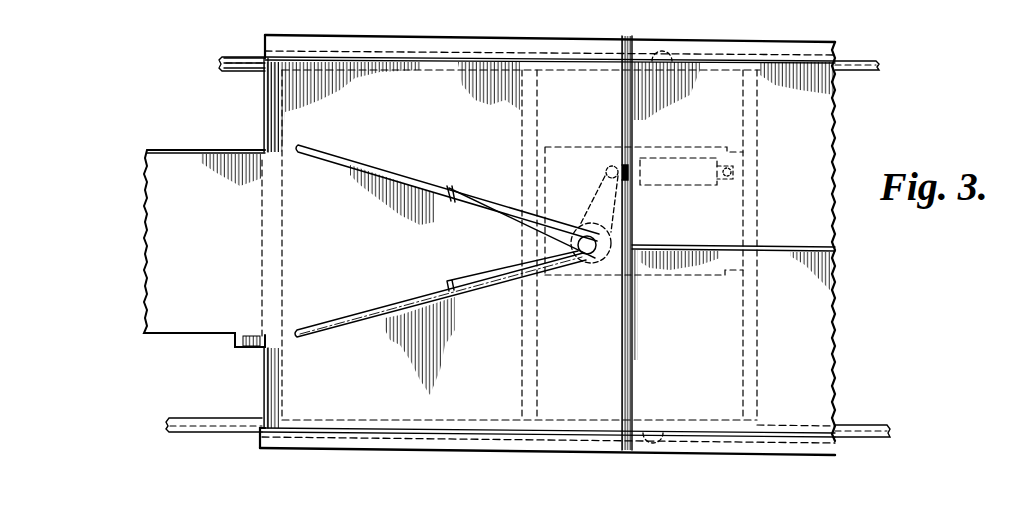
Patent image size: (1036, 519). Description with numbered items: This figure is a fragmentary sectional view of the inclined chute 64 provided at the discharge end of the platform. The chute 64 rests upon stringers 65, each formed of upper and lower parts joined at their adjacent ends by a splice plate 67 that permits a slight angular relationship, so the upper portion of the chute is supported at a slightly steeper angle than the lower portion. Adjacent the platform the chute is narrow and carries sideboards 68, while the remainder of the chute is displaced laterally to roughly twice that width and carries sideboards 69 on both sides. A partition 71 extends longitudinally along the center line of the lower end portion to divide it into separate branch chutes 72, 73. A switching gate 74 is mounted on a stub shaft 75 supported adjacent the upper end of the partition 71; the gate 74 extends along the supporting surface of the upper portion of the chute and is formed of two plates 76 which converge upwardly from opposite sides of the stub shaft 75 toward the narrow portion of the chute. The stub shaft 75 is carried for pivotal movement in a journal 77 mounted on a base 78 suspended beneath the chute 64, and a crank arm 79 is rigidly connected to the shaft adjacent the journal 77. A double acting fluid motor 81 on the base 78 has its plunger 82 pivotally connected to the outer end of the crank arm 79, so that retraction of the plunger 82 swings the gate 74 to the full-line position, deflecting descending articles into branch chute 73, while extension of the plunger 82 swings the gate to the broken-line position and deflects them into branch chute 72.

The inclined chute 64 is at (603, 37).
The stringers 65 is at (233, 69).
The splice plate 67 is at (671, 64).
The sideboards 68 is at (207, 158).
The sideboards 69 is at (509, 57).
The partition 71 is at (784, 247).
The branch chute 72 is at (792, 155).
The branch chute 73 is at (795, 337).
The switching gate 74 is at (421, 176).
The stub shaft 75 is at (583, 254).
The plates 76 is at (468, 196).
The journal 77 is at (603, 264).
The base 78 is at (660, 278).
The crank arm 79 is at (594, 197).
The double acting fluid motor 81 is at (676, 188).
The plunger 82 is at (629, 166).